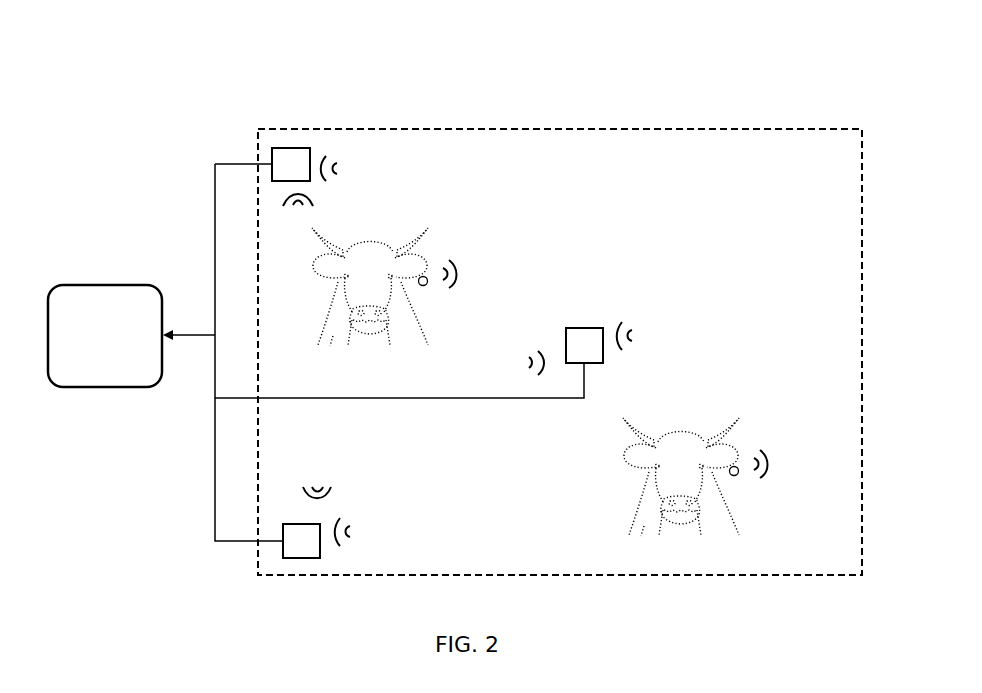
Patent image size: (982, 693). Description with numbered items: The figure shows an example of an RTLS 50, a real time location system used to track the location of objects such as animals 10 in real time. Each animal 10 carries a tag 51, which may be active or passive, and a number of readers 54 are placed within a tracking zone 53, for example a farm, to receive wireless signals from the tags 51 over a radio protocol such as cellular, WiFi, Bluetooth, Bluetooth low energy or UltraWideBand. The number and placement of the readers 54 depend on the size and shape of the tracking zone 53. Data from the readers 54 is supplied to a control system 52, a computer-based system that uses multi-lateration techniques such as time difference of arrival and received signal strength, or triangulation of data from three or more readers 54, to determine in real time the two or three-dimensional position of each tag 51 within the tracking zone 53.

The animal 10 is at (682, 442).
The RTLS 50 is at (837, 98).
The tag 51 is at (433, 288).
The control system 52 is at (92, 322).
The tracking zone 53 is at (714, 168).
The reader 54 is at (286, 158).